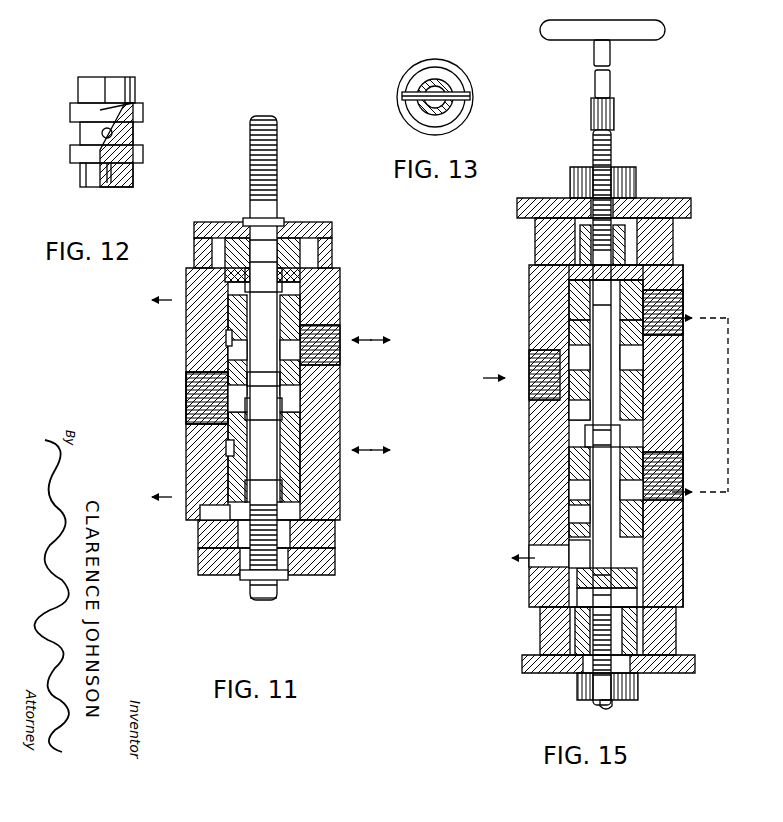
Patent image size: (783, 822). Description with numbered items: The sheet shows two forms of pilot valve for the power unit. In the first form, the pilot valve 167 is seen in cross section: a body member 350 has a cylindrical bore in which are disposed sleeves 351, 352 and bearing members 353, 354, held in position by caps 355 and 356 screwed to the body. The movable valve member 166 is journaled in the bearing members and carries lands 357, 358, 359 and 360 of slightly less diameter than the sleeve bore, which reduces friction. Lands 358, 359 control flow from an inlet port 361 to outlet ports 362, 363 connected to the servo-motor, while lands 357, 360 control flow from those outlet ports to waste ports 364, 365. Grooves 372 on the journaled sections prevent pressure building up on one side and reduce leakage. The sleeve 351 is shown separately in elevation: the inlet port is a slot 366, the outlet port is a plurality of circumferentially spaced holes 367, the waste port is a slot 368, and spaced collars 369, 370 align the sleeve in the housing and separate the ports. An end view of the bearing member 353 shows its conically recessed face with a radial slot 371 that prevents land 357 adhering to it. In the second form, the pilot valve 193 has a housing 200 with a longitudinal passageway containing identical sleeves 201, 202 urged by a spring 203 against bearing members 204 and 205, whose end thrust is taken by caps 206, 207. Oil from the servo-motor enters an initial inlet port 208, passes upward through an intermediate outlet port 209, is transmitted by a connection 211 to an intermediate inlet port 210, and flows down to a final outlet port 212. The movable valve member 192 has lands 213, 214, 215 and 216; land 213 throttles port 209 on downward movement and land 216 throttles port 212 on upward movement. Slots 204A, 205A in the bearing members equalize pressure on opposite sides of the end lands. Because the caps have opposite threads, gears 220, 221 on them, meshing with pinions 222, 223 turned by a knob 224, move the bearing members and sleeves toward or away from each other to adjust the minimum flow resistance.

In FIG. 11, the movable valve member 166 is at (279, 165).
In FIG. 11, the pilot valve 167 is at (218, 616).
In FIG. 15, the movable valve member 192 is at (612, 152).
In FIG. 15, the pilot valve 193 is at (752, 308).
In FIG. 15, the housing 200 is at (683, 536).
In FIG. 15, the sleeve 201 is at (660, 358).
In FIG. 15, the sleeve 202 is at (622, 470).
In FIG. 15, the spring 203 is at (595, 440).
In FIG. 15, the bearing member 204 is at (683, 276).
In FIG. 15, the slot 204A is at (540, 272).
In FIG. 15, the bearing member 205 is at (645, 608).
In FIG. 15, the slot 205A is at (637, 574).
In FIG. 15, the cap 206 is at (673, 242).
In FIG. 15, the cap 207 is at (545, 640).
In FIG. 15, the initial inlet port 208 is at (640, 386).
In FIG. 15, the intermediate outlet port 209 is at (590, 308).
In FIG. 15, the intermediate inlet port 210 is at (580, 508).
In FIG. 15, the connection 211 is at (728, 410).
In FIG. 15, the final outlet port 212 is at (595, 562).
In FIG. 15, the land 213 is at (585, 283).
In FIG. 15, the land 214 is at (575, 412).
In FIG. 15, the land 215 is at (570, 478).
In FIG. 15, the land 216 is at (585, 596).
In FIG. 15, the gear 220 is at (691, 206).
In FIG. 15, the gear 221 is at (540, 672).
In FIG. 15, the pinion 222 is at (636, 180).
In FIG. 15, the pinion 223 is at (640, 690).
In FIG. 15, the knob 224 is at (655, 38).
In FIG. 11, the body member 350 is at (200, 290).
In FIG. 11, the sleeve 351 is at (290, 322).
In FIG. 11, the sleeve 352 is at (285, 440).
In FIG. 13, the bearing member 353 is at (530, 137).
In FIG. 11, the bearing member 353 is at (300, 255).
In FIG. 11, the bearing member 354 is at (330, 522).
In FIG. 11, the cap 355 is at (332, 228).
In FIG. 11, the cap 356 is at (325, 568).
In FIG. 11, the land 357 is at (285, 290).
In FIG. 11, the land 358 is at (290, 385).
In FIG. 11, the land 359 is at (290, 412).
In FIG. 11, the land 360 is at (290, 495).
In FIG. 11, the inlet port 361 is at (195, 410).
In FIG. 11, the outlet port 362 is at (230, 365).
In FIG. 11, the outlet port 363 is at (235, 455).
In FIG. 11, the waste port 364 is at (240, 335).
In FIG. 11, the waste port 365 is at (205, 518).
In FIG. 12, the slot 366 is at (105, 186).
In FIG. 12, the holes 367 is at (100, 133).
In FIG. 12, the slot 368 is at (105, 78).
In FIG. 12, the collar 369 is at (72, 157).
In FIG. 12, the collar 370 is at (72, 110).
In FIG. 13, the radial slot 371 is at (455, 95).
In FIG. 11, the grooves 372 is at (250, 224).